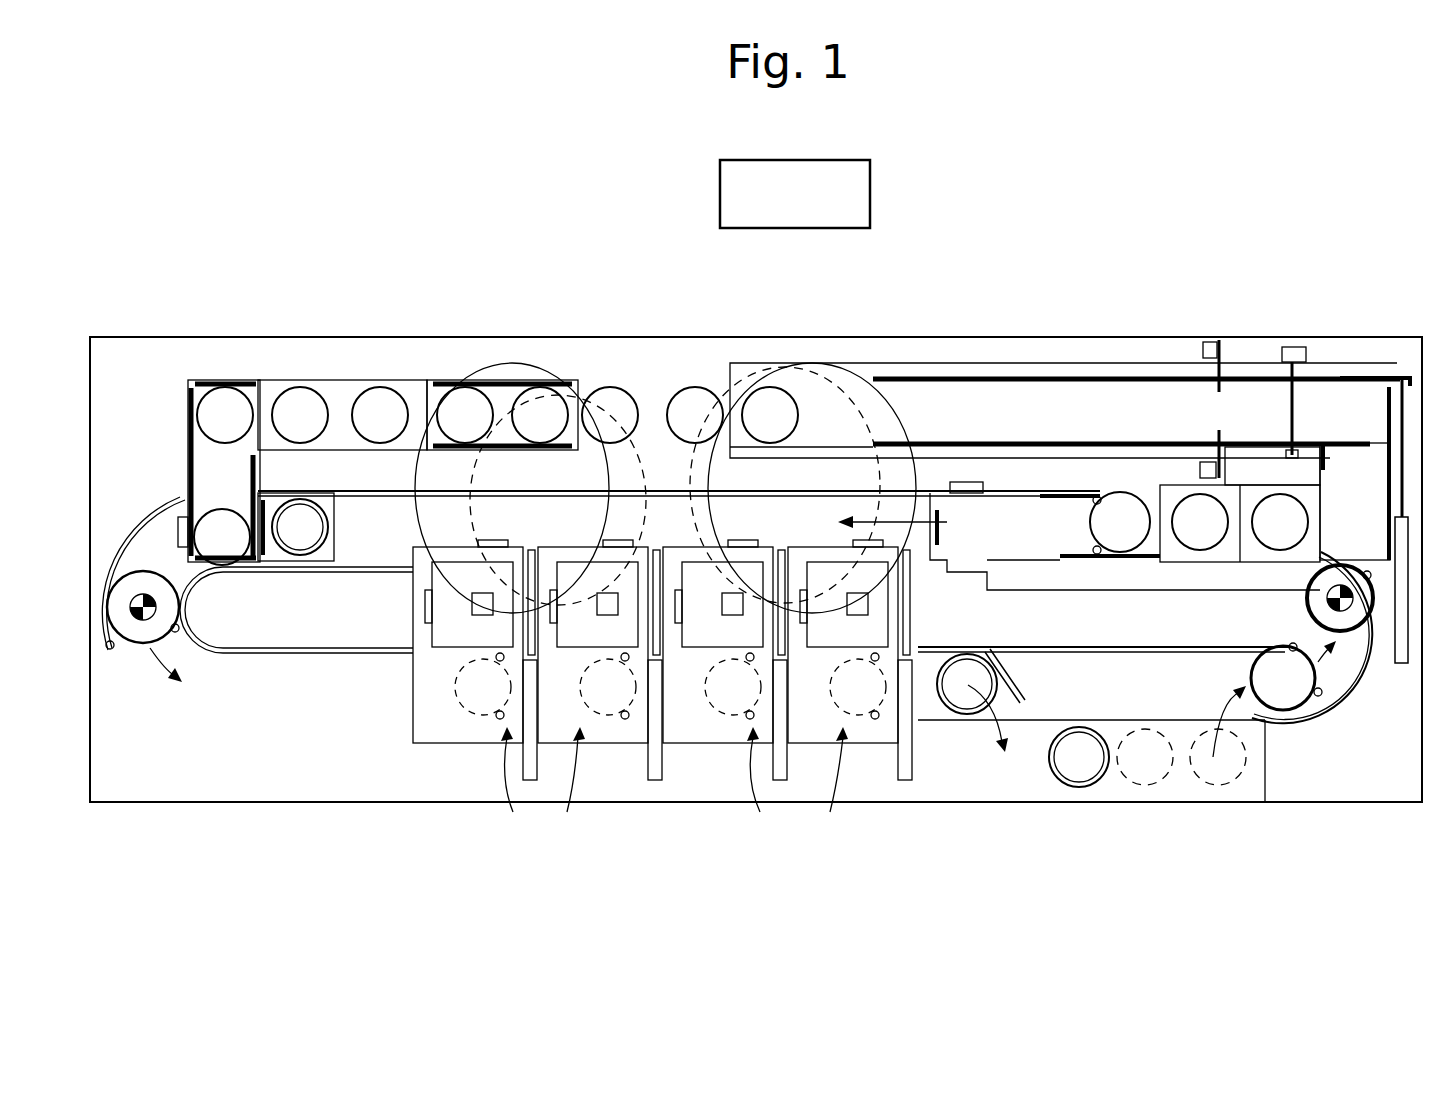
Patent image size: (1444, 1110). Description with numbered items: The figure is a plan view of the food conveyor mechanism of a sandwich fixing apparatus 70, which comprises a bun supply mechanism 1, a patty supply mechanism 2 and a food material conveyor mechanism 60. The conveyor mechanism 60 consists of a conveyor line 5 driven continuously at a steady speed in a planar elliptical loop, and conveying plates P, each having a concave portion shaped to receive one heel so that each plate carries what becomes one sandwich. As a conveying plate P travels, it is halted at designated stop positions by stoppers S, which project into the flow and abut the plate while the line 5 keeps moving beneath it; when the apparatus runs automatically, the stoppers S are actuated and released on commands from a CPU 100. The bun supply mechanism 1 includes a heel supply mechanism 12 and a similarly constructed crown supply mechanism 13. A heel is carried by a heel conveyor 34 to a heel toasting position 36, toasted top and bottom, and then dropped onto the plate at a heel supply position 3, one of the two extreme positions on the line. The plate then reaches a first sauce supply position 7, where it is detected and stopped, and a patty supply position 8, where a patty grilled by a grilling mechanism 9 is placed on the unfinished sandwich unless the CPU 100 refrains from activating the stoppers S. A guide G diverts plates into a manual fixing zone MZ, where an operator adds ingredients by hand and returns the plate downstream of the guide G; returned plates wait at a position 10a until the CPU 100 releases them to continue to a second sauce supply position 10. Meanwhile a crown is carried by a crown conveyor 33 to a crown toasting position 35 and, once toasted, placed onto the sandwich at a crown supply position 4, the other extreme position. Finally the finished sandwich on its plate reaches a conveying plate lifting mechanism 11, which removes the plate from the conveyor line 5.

The bun supply mechanism 1 is at (665, 409).
The patty supply mechanism 2 is at (646, 733).
The heel supply position 3 is at (233, 402).
The crown supply position 4 is at (1126, 505).
The conveyor line 5 is at (293, 710).
The first sauce supply position 7 is at (97, 628).
The patty supply position 8 is at (513, 812).
The grilling mechanism 9 is at (867, 868).
The second sauce supply position 10 is at (1352, 606).
The position 10a is at (1282, 665).
The conveying plate lifting mechanism 11 is at (313, 512).
The heel supply mechanism 12 is at (598, 375).
The crown supply mechanism 13 is at (794, 434).
The crown conveyor 33 is at (977, 402).
The heel conveyor 34 is at (432, 440).
The crown toasting position 35 is at (1212, 512).
The heel toasting position 36 is at (463, 400).
The food material conveyor mechanism 60 is at (1383, 757).
The sandwich fixing apparatus 70 is at (1398, 328).
The CPU 100 is at (870, 197).
The guide G is at (1043, 687).
The conveying plate P is at (1255, 860).
The stoppers S is at (1097, 547).
The manual fixing zone MZ is at (1152, 806).